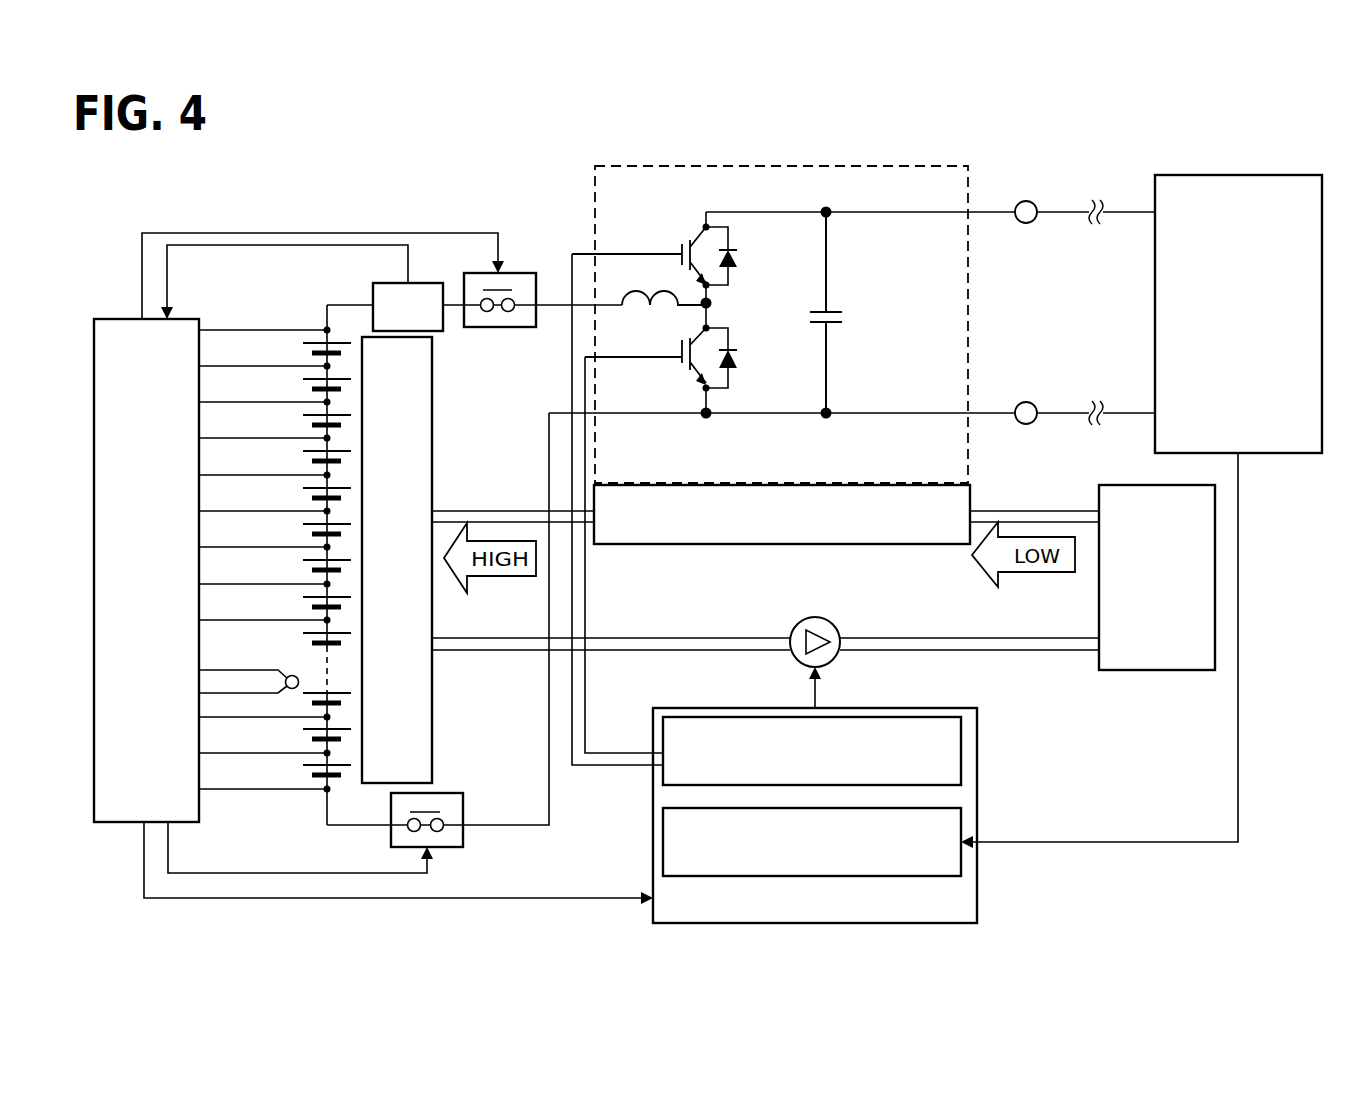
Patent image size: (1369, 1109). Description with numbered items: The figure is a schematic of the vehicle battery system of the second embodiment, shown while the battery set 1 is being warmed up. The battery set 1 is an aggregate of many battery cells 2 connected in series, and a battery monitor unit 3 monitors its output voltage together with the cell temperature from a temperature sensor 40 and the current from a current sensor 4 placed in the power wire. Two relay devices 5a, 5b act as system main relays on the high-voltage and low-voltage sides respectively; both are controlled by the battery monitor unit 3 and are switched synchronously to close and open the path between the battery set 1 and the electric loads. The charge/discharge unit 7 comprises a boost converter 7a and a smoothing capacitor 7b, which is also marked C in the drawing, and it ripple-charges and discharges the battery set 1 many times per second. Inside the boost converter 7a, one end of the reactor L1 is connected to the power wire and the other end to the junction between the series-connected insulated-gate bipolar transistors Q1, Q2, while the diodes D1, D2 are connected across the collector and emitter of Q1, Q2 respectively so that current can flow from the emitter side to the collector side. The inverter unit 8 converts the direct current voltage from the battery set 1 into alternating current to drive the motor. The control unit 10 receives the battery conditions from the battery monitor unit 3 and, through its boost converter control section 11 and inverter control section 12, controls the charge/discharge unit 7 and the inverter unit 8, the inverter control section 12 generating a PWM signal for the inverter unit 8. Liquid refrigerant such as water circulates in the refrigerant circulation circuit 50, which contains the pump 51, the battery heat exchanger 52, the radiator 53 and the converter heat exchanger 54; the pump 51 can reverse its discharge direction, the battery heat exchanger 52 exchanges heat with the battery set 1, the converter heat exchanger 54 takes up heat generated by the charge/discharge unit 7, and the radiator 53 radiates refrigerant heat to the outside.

The battery set 1 is at (286, 539).
The battery cell 2 is at (297, 352).
The battery monitor unit 3 is at (94, 438).
The current sensor 4 is at (374, 296).
The relay device 5a is at (522, 272).
The relay device 5b is at (451, 847).
The charge/discharge unit 7 is at (822, 162).
The boost converter 7a is at (689, 228).
The capacitor 7b is at (840, 298).
The inverter unit 8 is at (1322, 288).
The control unit 10 is at (977, 910).
The boost converter control section 11 is at (961, 757).
The inverter control section 12 is at (961, 863).
The temperature sensor 40 is at (289, 676).
The refrigerant circulation circuit 50 is at (986, 647).
The pump 51 is at (826, 614).
The battery heat exchanger 52 is at (433, 428).
The radiator 53 is at (1176, 670).
The converter heat exchanger 54 is at (660, 545).
The insulated-gate bipolar transistor Q1 is at (686, 272).
The insulated-gate bipolar transistor Q2 is at (686, 374).
The diode D1 is at (740, 258).
The diode D2 is at (740, 360).
The reactor L1 is at (628, 318).
The capacitor C is at (838, 330).